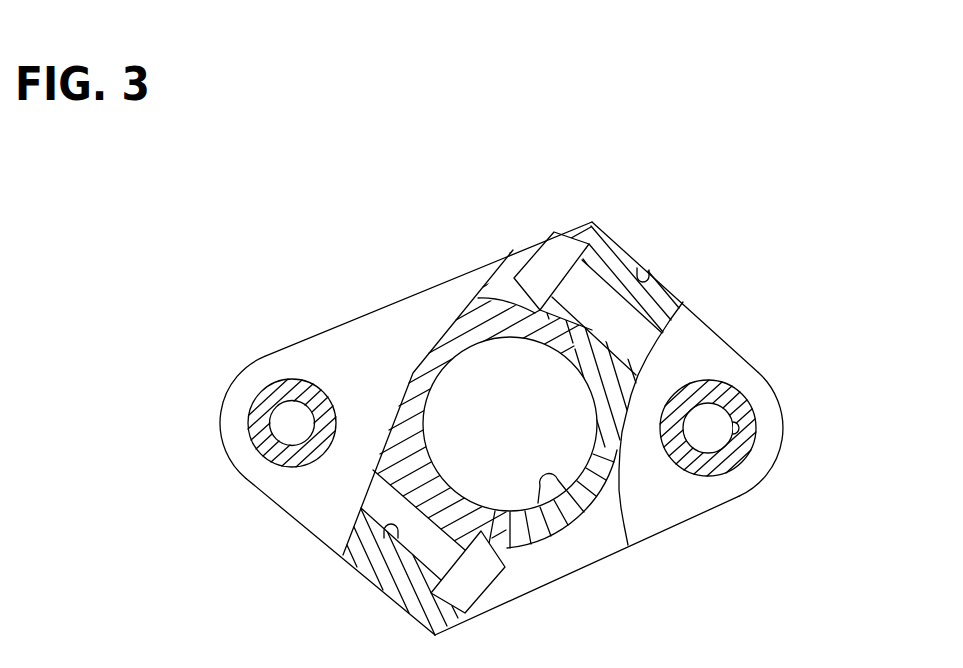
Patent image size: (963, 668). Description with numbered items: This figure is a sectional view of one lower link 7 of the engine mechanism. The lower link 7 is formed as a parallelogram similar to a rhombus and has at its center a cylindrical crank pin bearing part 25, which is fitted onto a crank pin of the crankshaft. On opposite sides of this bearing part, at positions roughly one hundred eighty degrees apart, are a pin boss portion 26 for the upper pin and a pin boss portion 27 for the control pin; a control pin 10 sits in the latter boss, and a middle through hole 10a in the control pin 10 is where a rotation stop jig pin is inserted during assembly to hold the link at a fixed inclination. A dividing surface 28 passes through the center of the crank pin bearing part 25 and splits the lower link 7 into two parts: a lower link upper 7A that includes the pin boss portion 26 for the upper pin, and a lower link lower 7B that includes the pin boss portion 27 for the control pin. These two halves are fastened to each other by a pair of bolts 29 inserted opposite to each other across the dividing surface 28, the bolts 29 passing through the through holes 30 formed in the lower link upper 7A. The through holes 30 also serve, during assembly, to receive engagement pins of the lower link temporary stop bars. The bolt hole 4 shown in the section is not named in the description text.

The bolt insertion hole 4 is at (262, 402).
The lower link 7 is at (337, 305).
The lower link upper 7A is at (592, 222).
The lower link lower 7B is at (683, 302).
The control pin 10 is at (733, 397).
The middle through hole 10a is at (730, 430).
The crank pin bearing part 25 is at (566, 490).
The pin boss portion for the upper pin 26 is at (280, 360).
The pin boss portion for the control pin 27 is at (765, 457).
The dividing surface 28 is at (653, 273).
The bolt 29 is at (543, 262).
The through hole 30 is at (384, 537).